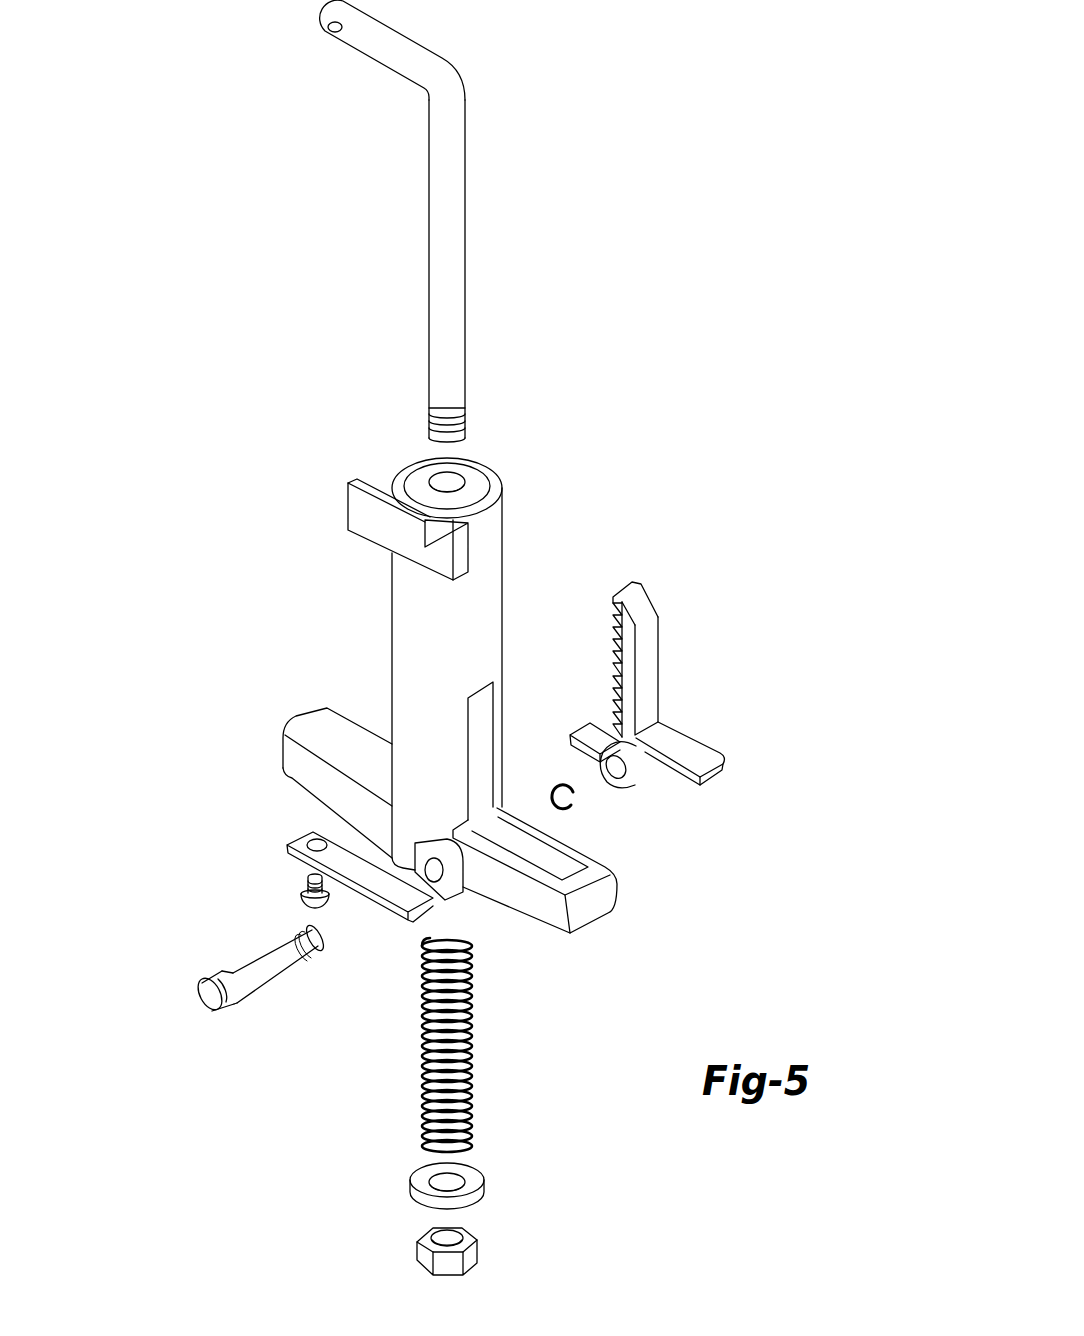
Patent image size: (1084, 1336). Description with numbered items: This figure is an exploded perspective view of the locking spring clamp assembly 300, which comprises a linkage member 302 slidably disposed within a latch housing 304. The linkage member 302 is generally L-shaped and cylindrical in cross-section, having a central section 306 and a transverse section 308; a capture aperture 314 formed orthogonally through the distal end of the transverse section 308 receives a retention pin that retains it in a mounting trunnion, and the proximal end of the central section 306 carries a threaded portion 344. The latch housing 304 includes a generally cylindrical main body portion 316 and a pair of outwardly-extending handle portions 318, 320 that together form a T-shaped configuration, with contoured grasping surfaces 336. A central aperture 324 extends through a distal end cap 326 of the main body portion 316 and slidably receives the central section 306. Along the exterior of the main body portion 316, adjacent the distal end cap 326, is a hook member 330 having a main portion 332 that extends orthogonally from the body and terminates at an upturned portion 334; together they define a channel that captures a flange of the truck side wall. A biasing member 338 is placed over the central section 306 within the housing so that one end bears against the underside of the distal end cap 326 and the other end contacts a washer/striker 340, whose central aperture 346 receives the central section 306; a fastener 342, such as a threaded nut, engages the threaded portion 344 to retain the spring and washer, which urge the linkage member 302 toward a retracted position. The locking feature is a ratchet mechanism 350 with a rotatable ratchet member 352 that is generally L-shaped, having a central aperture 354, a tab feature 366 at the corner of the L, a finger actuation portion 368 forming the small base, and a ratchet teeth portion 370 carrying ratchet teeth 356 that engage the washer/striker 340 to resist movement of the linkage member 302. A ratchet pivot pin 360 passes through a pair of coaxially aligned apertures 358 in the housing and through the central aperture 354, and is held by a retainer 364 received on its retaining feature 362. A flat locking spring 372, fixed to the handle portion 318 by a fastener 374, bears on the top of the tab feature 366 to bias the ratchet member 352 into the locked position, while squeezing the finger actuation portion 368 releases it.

The locking spring clamp assembly 300 is at (616, 438).
The linkage member 302 is at (430, 180).
The latch housing 304 is at (344, 607).
The central section 306 is at (452, 237).
The transverse section 308 is at (408, 48).
The capture aperture 314 is at (323, 30).
The main body portion 316 is at (477, 612).
The handle portion 318 is at (282, 748).
The handle portion 320 is at (583, 907).
The central aperture 324 is at (437, 487).
The distal end cap 326 is at (475, 472).
The hook member 330 is at (363, 513).
The main portion 332 is at (457, 555).
The upturned portion 334 is at (362, 482).
The grasping surface 336 is at (347, 738).
The biasing member 338 is at (422, 1102).
The washer/striker 340 is at (412, 1182).
The fastener 342 is at (415, 1248).
The threaded portion 344 is at (468, 413).
The central aperture 346 is at (452, 1187).
The ratchet mechanism 350 is at (756, 643).
The rotatable ratchet member 352 is at (648, 698).
The central aperture 354 is at (620, 773).
The ratchet teeth 356 is at (612, 603).
The apertures 358 is at (433, 872).
The ratchet pivot pin 360 is at (252, 975).
The retaining feature 362 is at (317, 940).
The retainer 364 is at (548, 797).
The tab feature 366 is at (587, 727).
The finger actuation portion 368 is at (698, 750).
The ratchet teeth portion 370 is at (658, 612).
The locking spring 372 is at (298, 838).
The fastener 374 is at (303, 888).